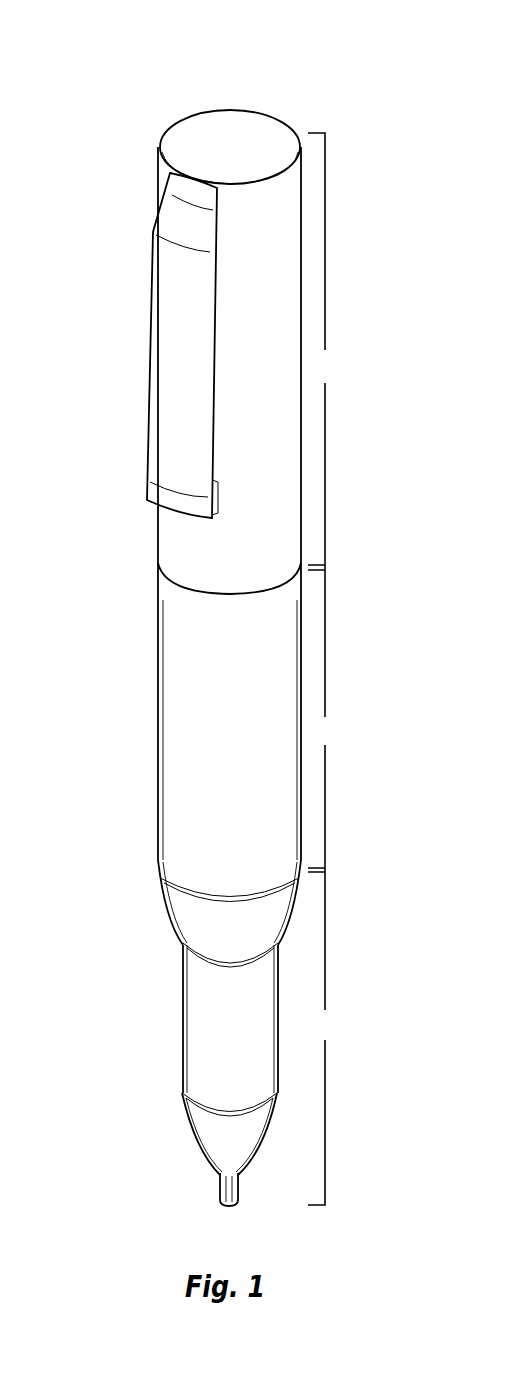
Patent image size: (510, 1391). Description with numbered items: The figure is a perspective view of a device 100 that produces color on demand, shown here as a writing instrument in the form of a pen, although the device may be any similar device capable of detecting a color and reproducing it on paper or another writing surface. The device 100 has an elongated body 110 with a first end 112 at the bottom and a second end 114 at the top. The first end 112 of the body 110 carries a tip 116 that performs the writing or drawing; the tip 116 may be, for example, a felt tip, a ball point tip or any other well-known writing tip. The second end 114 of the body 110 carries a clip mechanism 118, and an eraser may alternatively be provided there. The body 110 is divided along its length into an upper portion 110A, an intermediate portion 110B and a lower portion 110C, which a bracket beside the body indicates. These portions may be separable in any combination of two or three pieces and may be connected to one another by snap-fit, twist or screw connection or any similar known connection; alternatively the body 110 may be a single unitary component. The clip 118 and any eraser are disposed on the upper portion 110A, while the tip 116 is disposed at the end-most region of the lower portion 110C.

The device 100 is at (246, 74).
The body 110 is at (362, 123).
The upper portion 110A is at (208, 475).
The intermediate portion 110B is at (251, 772).
The lower portion 110C is at (230, 1082).
The first end 112 is at (216, 1186).
The second end 114 is at (259, 142).
The tip 116 is at (225, 1203).
The clip mechanism 118 is at (148, 375).